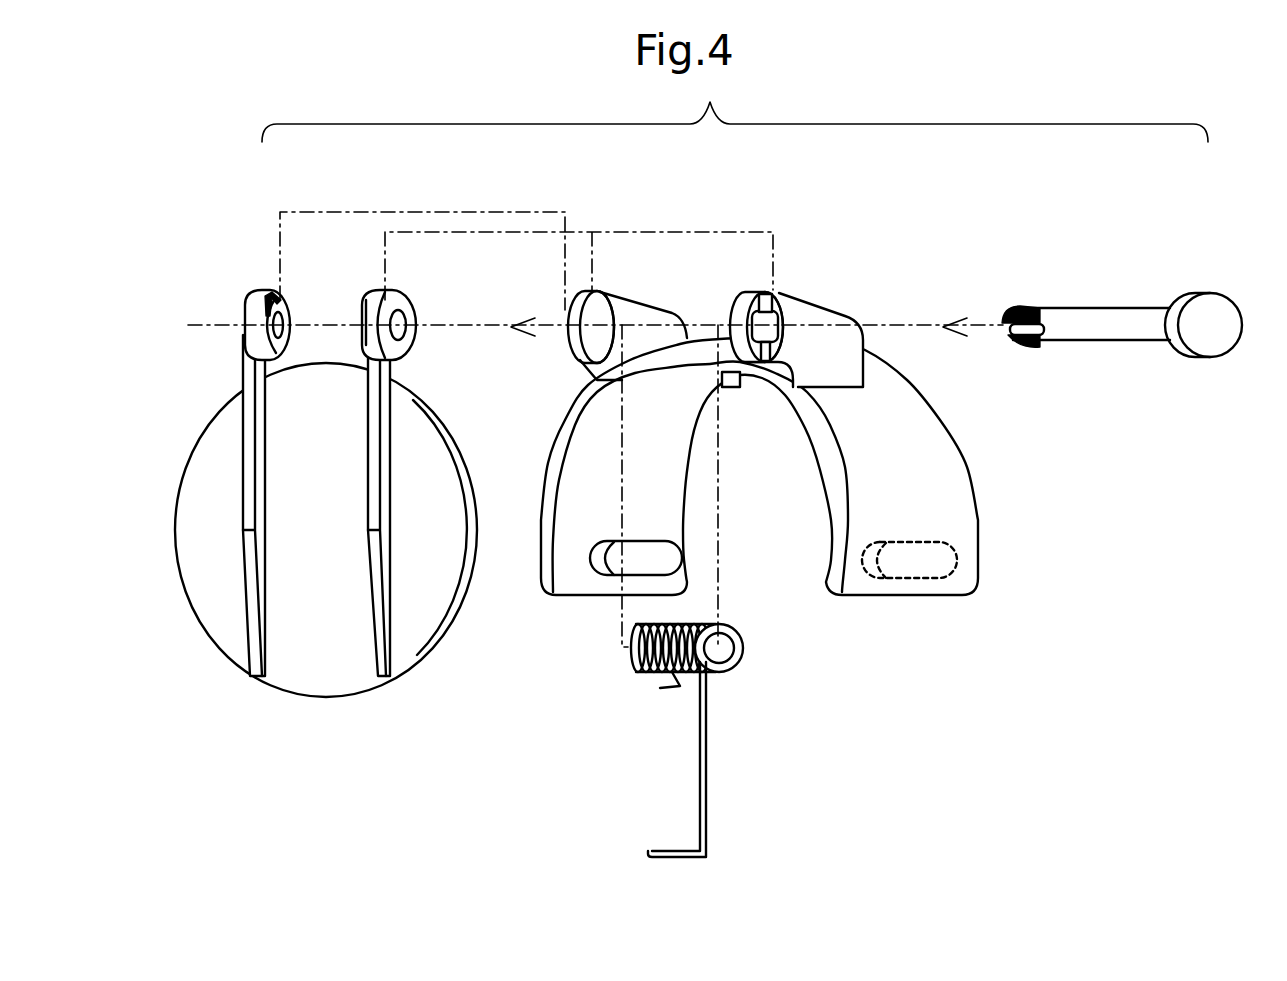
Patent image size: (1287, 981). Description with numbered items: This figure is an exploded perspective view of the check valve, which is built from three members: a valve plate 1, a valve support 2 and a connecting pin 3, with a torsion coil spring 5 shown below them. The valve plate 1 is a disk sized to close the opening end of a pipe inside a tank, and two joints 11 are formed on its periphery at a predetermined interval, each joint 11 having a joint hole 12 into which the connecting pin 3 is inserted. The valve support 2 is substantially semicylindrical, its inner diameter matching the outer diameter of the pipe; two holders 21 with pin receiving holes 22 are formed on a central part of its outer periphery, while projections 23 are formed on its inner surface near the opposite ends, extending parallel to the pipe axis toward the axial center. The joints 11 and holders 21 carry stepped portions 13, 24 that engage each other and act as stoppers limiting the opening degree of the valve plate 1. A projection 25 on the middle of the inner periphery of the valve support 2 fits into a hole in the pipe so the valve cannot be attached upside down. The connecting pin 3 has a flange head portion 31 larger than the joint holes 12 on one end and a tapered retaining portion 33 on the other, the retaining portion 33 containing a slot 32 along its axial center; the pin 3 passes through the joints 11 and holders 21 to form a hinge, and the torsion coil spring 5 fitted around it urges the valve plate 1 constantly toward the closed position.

The valve plate 1 is at (152, 485).
The joints 11 is at (250, 307).
The joint hole 12 is at (280, 312).
The stepped portion 13 is at (262, 312).
The valve support 2 is at (887, 246).
The holders 21 is at (592, 290).
The pin receiving holes 22 is at (780, 324).
The projections 23 is at (615, 562).
The stepped portion 24 is at (775, 290).
The projection 25 is at (733, 386).
The connecting pin 3 is at (1143, 303).
The flange head portion 31 is at (1230, 296).
The slot 32 is at (1040, 340).
The retaining portion 33 is at (1027, 304).
The torsion coil spring 5 is at (740, 657).